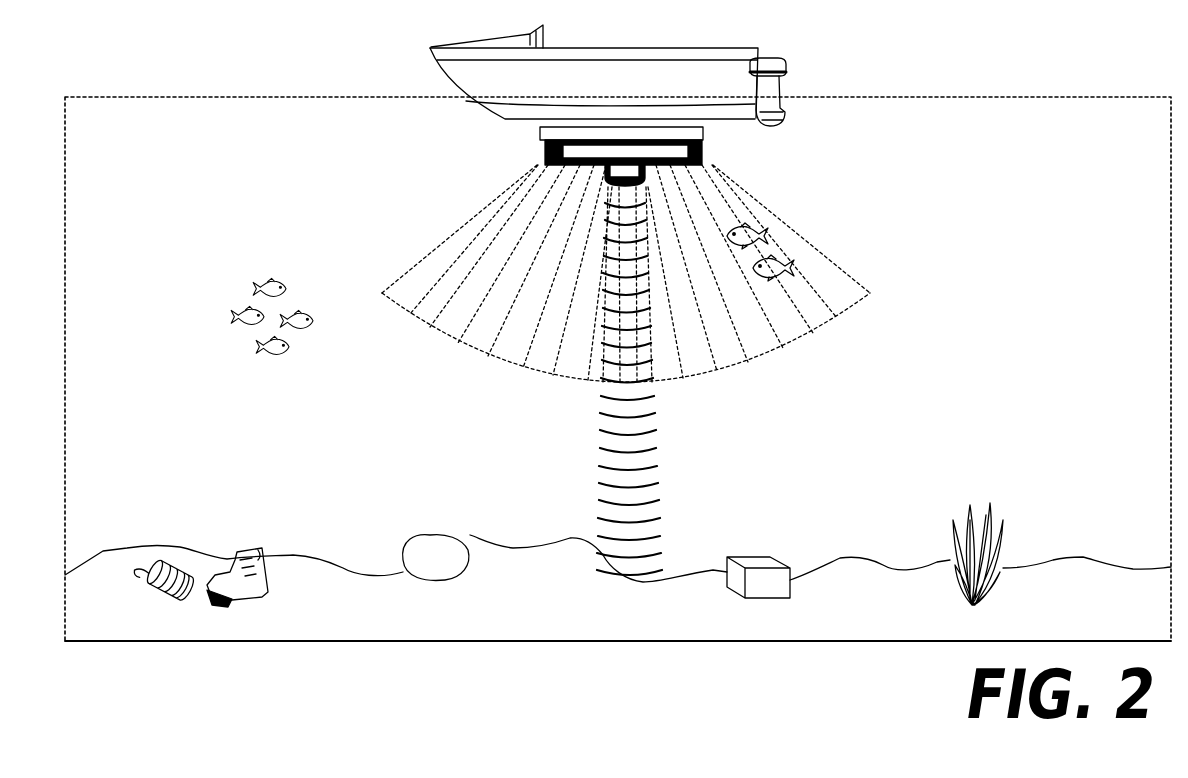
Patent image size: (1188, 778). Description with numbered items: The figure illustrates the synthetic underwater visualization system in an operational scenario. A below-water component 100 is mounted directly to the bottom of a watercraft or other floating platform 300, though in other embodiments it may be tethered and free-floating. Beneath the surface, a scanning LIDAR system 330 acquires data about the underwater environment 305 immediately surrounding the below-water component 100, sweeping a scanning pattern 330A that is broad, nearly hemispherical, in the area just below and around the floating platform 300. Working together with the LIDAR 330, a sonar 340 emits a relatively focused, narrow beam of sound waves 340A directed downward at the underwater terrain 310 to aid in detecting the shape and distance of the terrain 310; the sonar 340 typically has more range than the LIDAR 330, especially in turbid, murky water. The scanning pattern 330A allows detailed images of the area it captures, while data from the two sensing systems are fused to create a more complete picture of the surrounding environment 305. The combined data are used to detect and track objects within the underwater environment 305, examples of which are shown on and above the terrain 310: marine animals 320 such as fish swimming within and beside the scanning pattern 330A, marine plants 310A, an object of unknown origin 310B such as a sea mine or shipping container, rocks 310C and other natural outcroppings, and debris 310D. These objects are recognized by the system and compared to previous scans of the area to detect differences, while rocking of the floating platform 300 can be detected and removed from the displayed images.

The below-water component 100 is at (540, 134).
The floating platform 300 is at (688, 48).
The underwater environment 305 is at (1043, 97).
The underwater terrain 310 is at (1056, 555).
The marine plants 310A is at (962, 556).
The objects of unknown origin 310B is at (758, 556).
The rocks 310C is at (418, 540).
The debris 310D is at (222, 570).
The marine animals 320 is at (790, 260).
The scanning LIDAR system 330 is at (703, 152).
The scanning pattern 330A is at (733, 352).
The sonar 340 is at (605, 172).
The beam of sound waves 340A is at (598, 425).